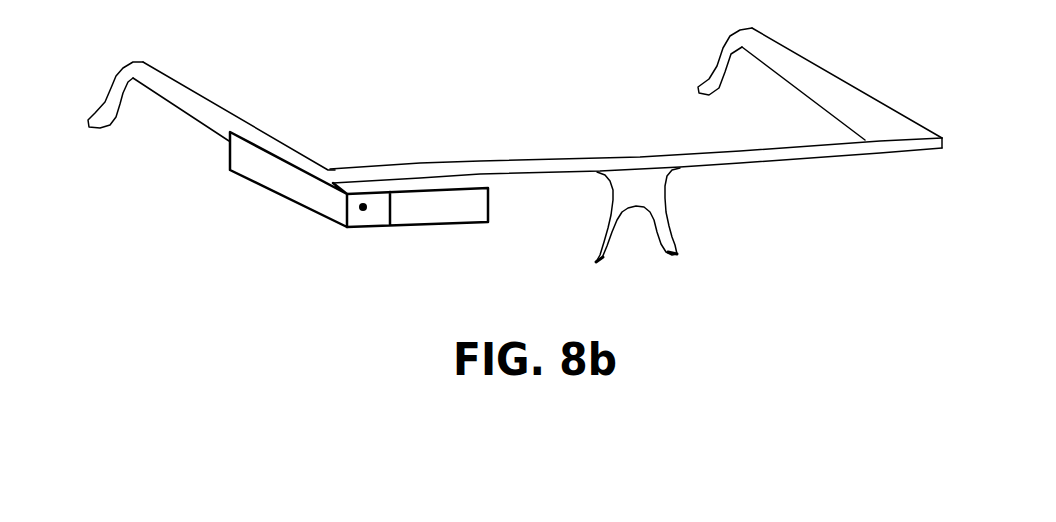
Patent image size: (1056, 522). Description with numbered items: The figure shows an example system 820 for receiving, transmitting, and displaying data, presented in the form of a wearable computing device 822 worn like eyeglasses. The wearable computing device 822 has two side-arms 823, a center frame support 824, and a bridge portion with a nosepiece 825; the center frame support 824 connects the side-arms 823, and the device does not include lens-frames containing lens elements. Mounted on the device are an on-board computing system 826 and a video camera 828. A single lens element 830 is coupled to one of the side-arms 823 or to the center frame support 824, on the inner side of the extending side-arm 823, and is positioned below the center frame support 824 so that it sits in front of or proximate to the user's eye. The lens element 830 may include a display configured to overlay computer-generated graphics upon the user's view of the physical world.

The system 820 is at (925, 65).
The wearable computing device 822 is at (945, 200).
The side-arms 823 is at (192, 102).
The center frame support 824 is at (535, 163).
The nosepiece 825 is at (662, 207).
The on-board computing system 826 is at (267, 188).
The video camera 828 is at (363, 207).
The single lens element 830 is at (443, 223).